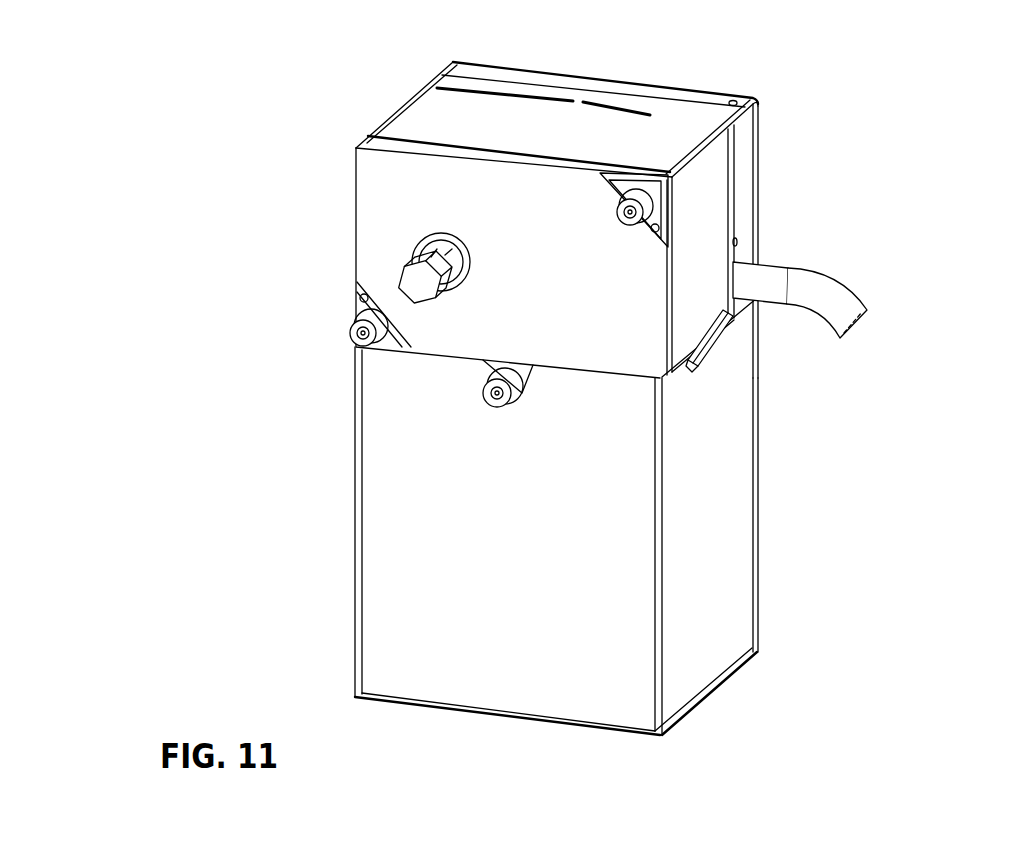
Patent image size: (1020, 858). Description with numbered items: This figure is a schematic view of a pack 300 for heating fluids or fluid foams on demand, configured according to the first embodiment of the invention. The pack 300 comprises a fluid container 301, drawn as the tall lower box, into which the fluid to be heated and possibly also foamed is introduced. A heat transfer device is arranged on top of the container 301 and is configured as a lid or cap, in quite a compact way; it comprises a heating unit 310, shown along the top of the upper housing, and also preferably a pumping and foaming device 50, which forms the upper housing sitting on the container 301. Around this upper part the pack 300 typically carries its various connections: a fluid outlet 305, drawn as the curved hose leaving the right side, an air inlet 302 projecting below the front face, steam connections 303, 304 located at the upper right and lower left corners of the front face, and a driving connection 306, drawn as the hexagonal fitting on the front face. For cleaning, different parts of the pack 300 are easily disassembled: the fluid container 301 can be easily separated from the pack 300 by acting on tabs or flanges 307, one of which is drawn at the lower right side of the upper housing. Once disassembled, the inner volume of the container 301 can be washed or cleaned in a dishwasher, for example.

The pack 300 is at (148, 463).
The fluid container 301 is at (625, 609).
The pumping and foaming device 50 is at (428, 118).
The heating unit 310 is at (440, 70).
The air inlet 302 is at (483, 395).
The steam connection 303 is at (640, 200).
The steam connection 304 is at (357, 335).
The fluid outlet 305 is at (775, 272).
The driving connection 306 is at (408, 285).
The tabs or flanges 307 is at (717, 328).